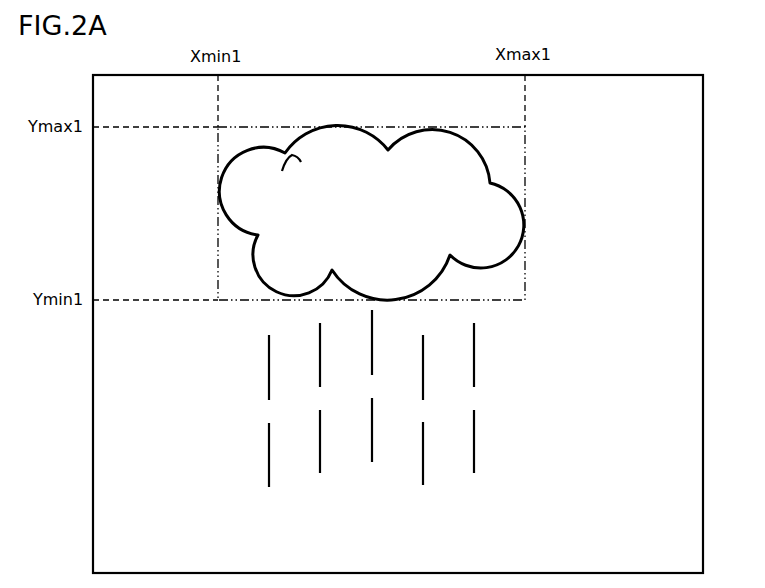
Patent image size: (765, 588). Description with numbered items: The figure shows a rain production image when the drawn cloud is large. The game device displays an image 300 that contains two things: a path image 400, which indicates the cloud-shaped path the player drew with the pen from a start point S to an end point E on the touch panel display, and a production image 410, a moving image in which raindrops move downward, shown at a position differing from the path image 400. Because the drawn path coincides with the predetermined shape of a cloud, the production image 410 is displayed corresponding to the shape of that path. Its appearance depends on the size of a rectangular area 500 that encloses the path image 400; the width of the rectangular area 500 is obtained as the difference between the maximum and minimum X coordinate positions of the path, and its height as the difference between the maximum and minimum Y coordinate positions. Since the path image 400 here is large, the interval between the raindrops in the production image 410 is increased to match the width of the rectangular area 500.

The image 300 is at (630, 74).
The path image 400 is at (507, 184).
The production image 410 is at (501, 350).
The rectangular area 500 is at (267, 124).